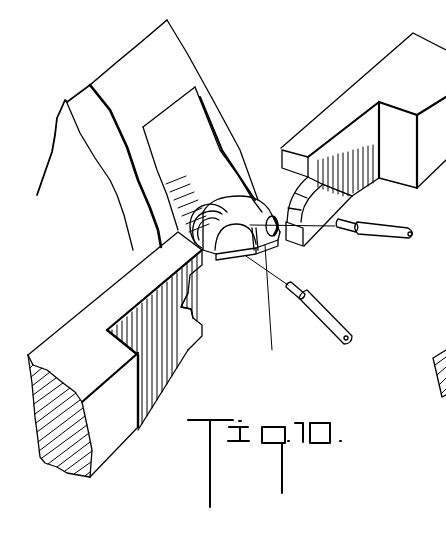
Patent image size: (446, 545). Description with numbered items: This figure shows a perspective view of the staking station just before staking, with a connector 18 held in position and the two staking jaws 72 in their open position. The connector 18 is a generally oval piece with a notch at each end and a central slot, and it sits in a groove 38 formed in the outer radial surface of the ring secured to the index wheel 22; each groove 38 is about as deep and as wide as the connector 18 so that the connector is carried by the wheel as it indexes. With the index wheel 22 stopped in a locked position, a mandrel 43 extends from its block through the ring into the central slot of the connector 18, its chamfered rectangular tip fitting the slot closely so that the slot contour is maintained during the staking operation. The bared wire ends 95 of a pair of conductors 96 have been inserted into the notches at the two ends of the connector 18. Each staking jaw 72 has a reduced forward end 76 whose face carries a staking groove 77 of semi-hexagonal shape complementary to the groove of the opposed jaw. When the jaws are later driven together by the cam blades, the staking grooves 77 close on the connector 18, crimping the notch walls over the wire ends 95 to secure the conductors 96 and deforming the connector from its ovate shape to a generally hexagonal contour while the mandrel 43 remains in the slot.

The index wheel 22 is at (172, 51).
The groove 38 is at (190, 100).
The staking jaw 72 is at (75, 318).
The reduced forward end 76 is at (133, 277).
The staking groove 77 is at (200, 312).
The connector 18 is at (248, 200).
The mandrel 43 is at (262, 250).
The bared wire end 95 is at (347, 233).
The conductor 96 is at (392, 237).